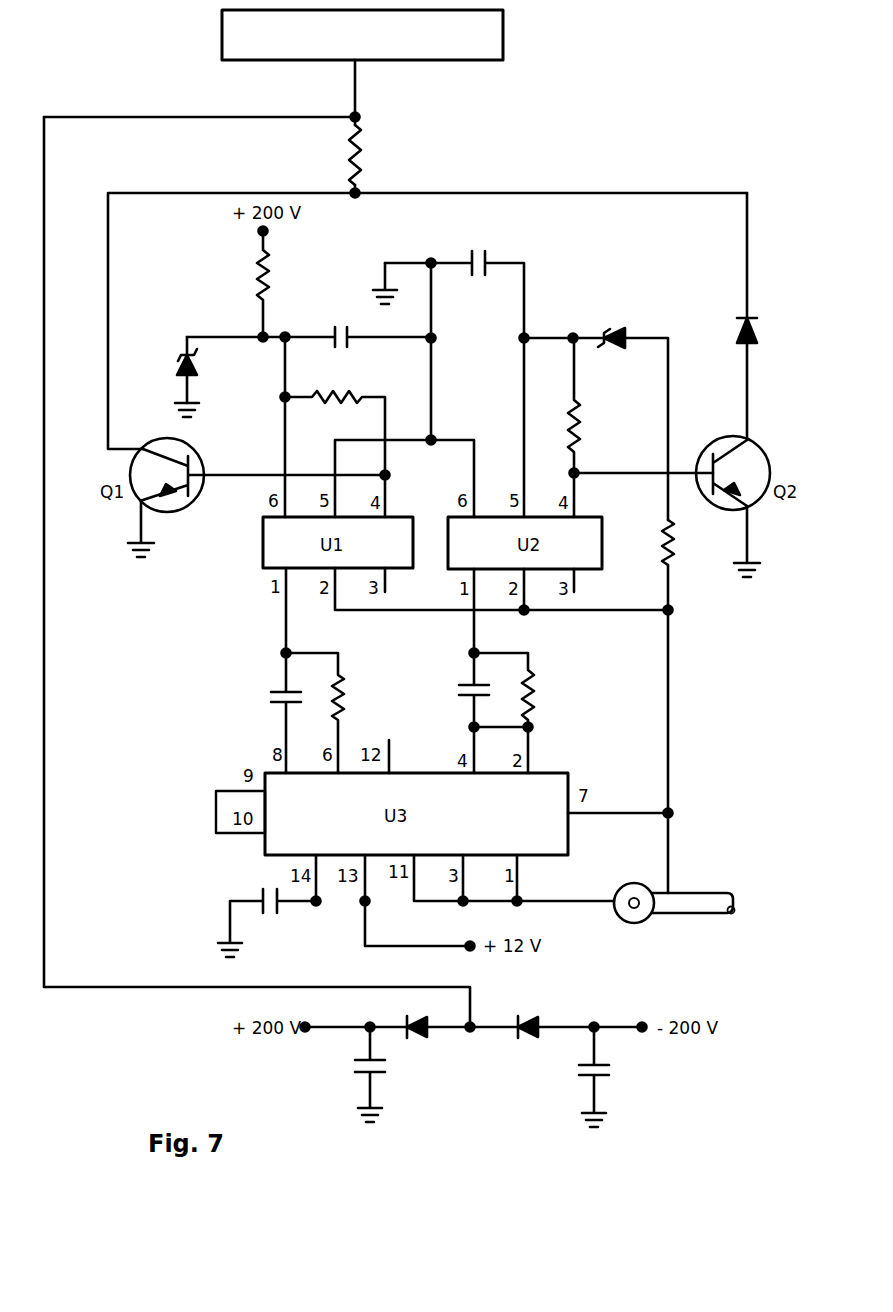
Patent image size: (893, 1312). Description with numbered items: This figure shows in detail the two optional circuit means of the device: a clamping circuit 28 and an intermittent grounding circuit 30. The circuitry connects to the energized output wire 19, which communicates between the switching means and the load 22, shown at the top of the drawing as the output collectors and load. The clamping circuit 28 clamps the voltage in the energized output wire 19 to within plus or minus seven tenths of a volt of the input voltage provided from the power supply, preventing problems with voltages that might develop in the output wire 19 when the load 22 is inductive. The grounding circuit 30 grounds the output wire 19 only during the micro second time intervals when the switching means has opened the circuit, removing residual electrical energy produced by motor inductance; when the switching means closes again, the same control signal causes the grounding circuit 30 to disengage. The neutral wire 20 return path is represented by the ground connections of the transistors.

The load 22 is at (503, 50).
The energized output wire 19 is at (355, 84).
The neutral wire 20 is at (142, 556).
The clamping circuit 28 is at (95, 992).
The grounding circuit 30 is at (704, 940).